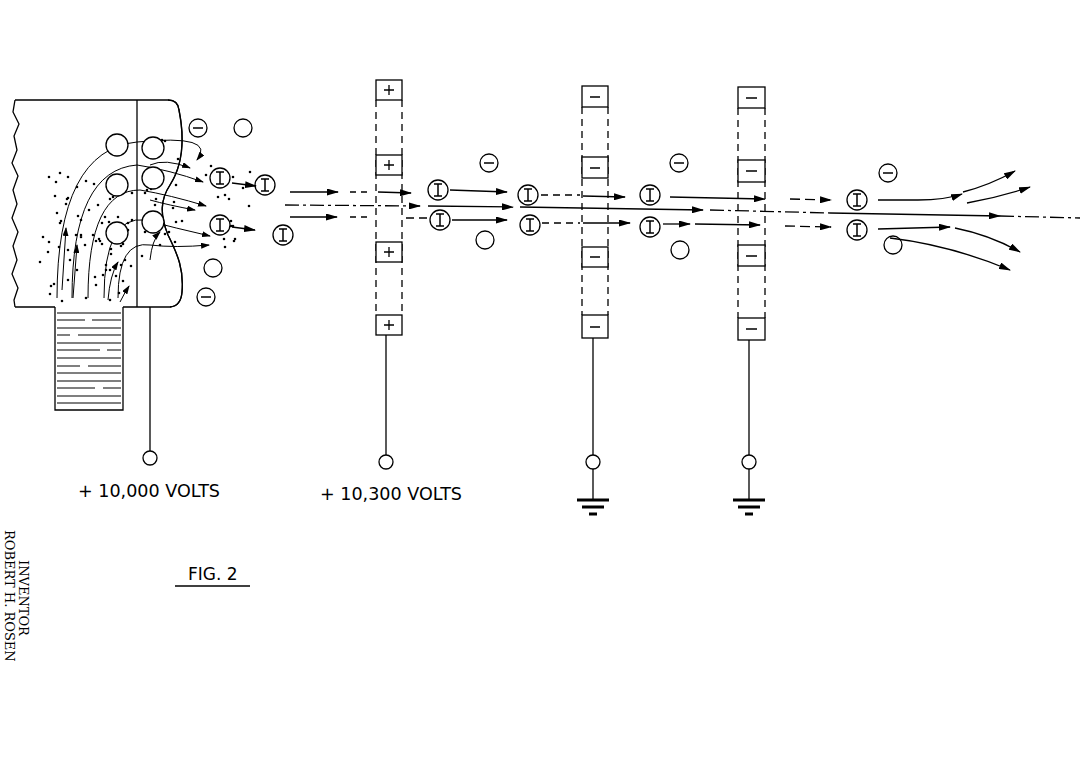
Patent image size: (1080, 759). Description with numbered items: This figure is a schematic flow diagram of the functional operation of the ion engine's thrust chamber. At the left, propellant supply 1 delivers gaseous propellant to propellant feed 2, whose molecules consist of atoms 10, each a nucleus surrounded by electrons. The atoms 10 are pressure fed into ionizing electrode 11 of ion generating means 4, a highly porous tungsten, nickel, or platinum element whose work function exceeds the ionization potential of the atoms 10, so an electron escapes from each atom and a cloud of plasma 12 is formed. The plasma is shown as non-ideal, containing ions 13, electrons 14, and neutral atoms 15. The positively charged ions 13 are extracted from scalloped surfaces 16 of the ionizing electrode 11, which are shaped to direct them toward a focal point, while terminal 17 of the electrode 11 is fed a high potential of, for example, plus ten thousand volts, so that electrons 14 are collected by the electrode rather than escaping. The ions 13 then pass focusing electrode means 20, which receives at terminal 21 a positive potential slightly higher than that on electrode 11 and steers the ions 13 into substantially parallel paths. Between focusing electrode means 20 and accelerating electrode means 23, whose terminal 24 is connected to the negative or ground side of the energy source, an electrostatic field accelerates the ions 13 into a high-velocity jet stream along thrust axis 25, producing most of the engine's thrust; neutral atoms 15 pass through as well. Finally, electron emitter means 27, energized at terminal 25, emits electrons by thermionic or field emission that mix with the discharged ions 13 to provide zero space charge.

The propellant supply 1 is at (60, 374).
The propellant feed 2 is at (103, 99).
The ion generating means 4 is at (147, 96).
The atoms 10 is at (110, 137).
The ionizing electrode 11 is at (169, 100).
The plasma 12 is at (164, 140).
The ions 13 is at (273, 178).
The electrons 14 is at (215, 297).
The neutral atoms 15 is at (223, 267).
The scalloped surfaces 16 is at (181, 291).
The terminal 17 is at (157, 458).
The focusing electrode means 20 is at (384, 82).
The terminal 21 is at (393, 460).
The accelerating electrode means 23 is at (595, 88).
The terminal 24 is at (600, 462).
The thrust axis 25 is at (756, 464).
The electron emitter means 27 is at (760, 88).